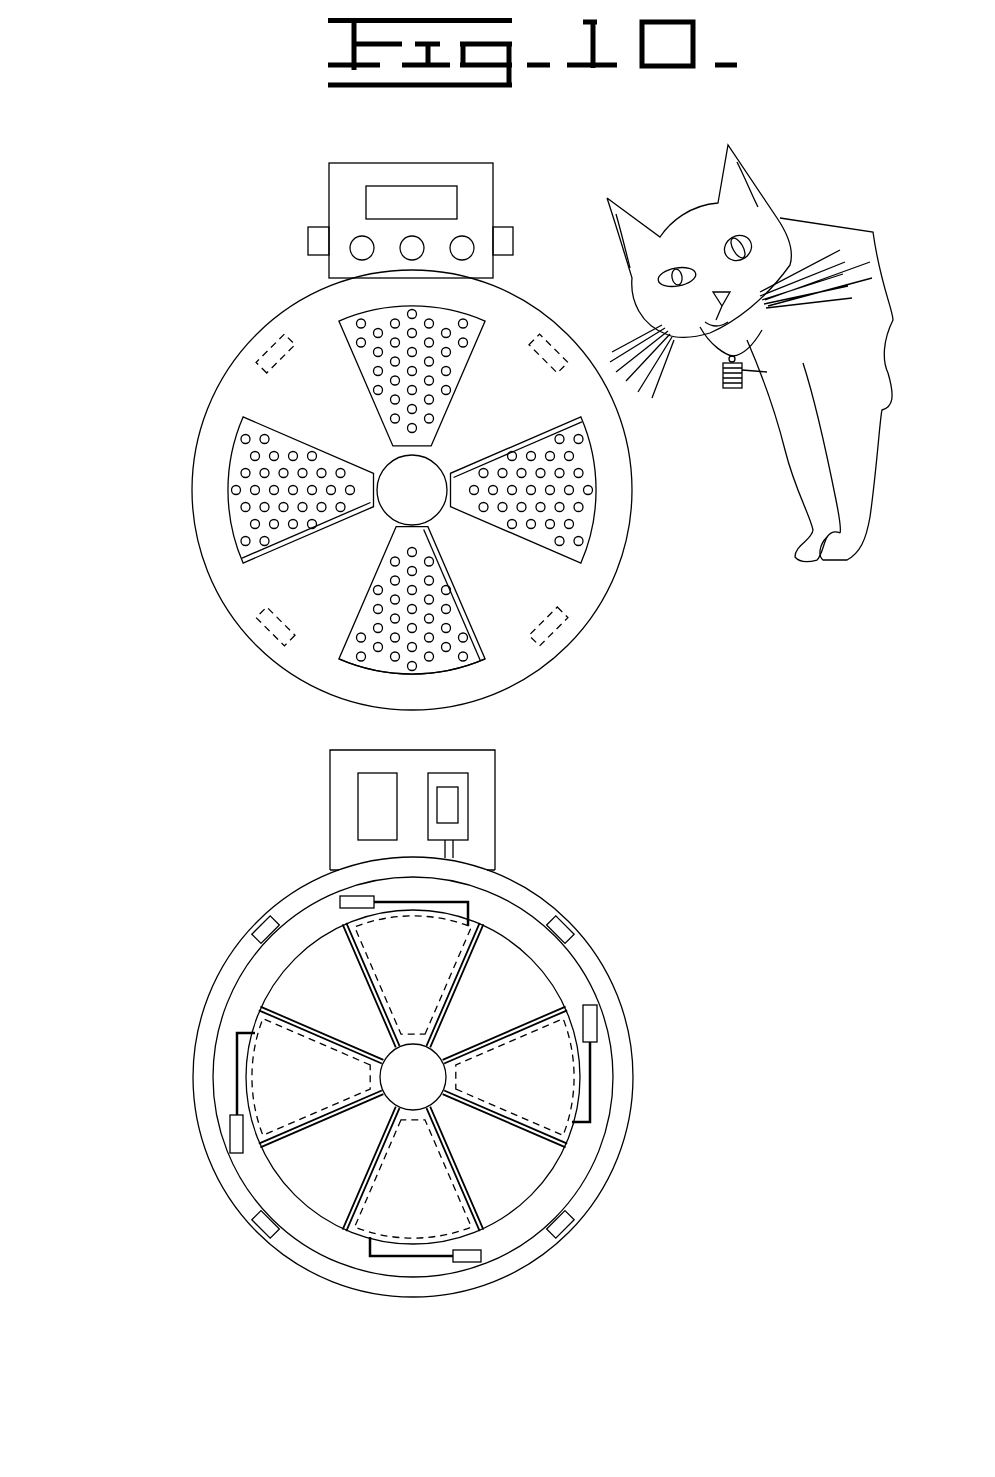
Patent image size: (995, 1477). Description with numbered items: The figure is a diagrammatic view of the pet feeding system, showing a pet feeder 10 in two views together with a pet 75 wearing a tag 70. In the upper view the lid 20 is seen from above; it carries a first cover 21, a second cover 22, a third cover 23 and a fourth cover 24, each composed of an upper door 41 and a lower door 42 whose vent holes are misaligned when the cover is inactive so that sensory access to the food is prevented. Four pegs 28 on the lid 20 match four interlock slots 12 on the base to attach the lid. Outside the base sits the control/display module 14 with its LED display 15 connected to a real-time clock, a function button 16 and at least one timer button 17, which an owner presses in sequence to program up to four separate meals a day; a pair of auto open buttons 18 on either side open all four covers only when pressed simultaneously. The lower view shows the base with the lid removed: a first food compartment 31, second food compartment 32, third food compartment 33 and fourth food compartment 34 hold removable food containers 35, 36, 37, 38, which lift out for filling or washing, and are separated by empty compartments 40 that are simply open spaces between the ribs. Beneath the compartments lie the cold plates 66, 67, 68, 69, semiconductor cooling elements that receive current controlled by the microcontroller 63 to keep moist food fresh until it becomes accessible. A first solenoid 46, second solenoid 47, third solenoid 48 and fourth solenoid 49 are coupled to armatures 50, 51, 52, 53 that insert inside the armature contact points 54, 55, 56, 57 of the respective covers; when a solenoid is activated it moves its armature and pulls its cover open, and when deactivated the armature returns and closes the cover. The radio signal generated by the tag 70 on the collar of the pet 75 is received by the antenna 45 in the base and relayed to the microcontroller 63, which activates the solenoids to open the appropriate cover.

The pet feeder 10 is at (171, 620).
The interlock slots 12 is at (572, 928).
The control/display module 14 is at (504, 181).
The LED display 15 is at (400, 214).
The function button 16 is at (354, 236).
The timer button 17 is at (459, 235).
The auto open buttons 18 is at (310, 241).
The lid 20 is at (210, 384).
The first cover 21 is at (346, 340).
The second cover 22 is at (243, 547).
The third cover 23 is at (340, 660).
The fourth cover 24 is at (582, 549).
The pegs 28 is at (266, 632).
The first food compartment 31 is at (350, 950).
The second food compartment 32 is at (281, 1127).
The third food compartment 33 is at (348, 1220).
The fourth food compartment 34 is at (578, 1150).
The removable food container 35 is at (395, 966).
The removable food container 36 is at (226, 1046).
The removable food container 37 is at (411, 1228).
The removable food container 38 is at (556, 1040).
The empty compartments 40 is at (317, 1013).
The upper door 41 is at (447, 673).
The lower door 42 is at (484, 647).
The antenna 45 is at (578, 965).
The first solenoid 46 is at (340, 899).
The second solenoid 47 is at (229, 1130).
The third solenoid 48 is at (488, 1260).
The fourth solenoid 49 is at (598, 1025).
The first armature 50 is at (372, 900).
The armature 51 is at (213, 1083).
The armature 52 is at (443, 1258).
The armature 53 is at (600, 1062).
The armature contact point 54 is at (472, 926).
The armature contact point 55 is at (247, 1030).
The armature contact point 56 is at (370, 1238).
The armature contact point 57 is at (573, 1112).
The microcontroller 63 is at (458, 805).
The first cold plate 66 is at (460, 953).
The cold plate 67 is at (323, 1100).
The cold plate 68 is at (458, 1210).
The cold plate 69 is at (598, 1112).
The tag 70 is at (718, 414).
The pet 75 is at (621, 302).